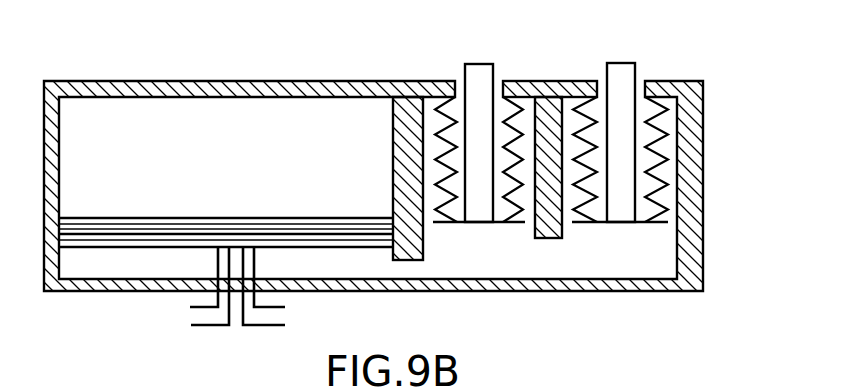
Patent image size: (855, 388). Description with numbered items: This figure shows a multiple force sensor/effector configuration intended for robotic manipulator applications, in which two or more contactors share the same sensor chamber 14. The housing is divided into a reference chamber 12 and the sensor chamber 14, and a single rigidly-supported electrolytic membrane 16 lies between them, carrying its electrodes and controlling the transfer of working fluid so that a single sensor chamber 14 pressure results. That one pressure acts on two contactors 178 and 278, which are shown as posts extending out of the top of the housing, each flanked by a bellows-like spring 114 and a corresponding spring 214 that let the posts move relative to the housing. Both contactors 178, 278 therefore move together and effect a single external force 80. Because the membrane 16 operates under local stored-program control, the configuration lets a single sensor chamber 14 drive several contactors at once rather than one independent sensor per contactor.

The reference chamber 12 is at (257, 160).
The sensor chamber 14 is at (622, 262).
The electrolytic membrane 16 is at (132, 240).
The external force 80 is at (567, 55).
The spring 114 is at (437, 127).
The contactor 178 is at (477, 69).
The spring 214 is at (662, 153).
The contactor 278 is at (622, 76).